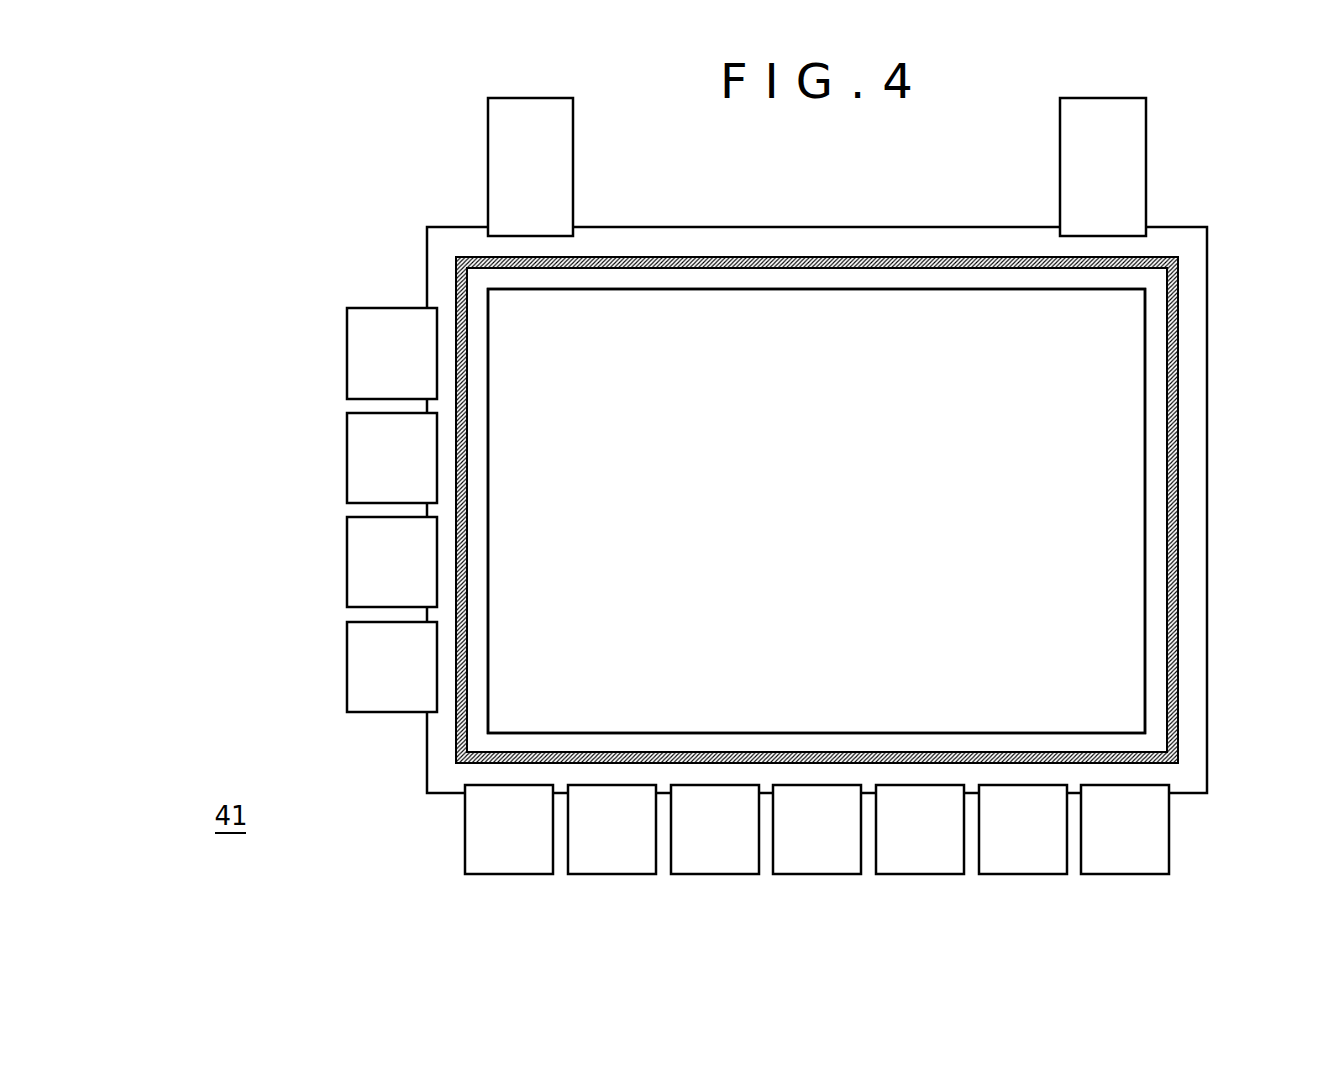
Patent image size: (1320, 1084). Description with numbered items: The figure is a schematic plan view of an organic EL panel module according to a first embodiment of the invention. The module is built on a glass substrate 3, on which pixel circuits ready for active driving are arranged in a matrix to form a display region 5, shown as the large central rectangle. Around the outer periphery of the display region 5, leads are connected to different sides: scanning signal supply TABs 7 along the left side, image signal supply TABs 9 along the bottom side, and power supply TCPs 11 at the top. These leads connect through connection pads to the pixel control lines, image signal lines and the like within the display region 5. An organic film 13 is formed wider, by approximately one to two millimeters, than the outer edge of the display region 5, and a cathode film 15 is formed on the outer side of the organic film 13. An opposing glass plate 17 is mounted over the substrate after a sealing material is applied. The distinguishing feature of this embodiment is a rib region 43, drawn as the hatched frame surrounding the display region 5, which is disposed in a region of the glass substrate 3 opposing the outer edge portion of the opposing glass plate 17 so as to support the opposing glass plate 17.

The glass substrate 3 is at (1207, 563).
The display region 5 is at (1067, 463).
The scanning signal supply TAB 7 is at (361, 357).
The image signal supply TAB 9 is at (513, 862).
The power supply TCP 11 is at (501, 142).
The organic film 13 is at (1145, 387).
The cathode film 15 is at (1167, 658).
The opposing glass plate 17 is at (805, 262).
The rib region 43 is at (1178, 311).